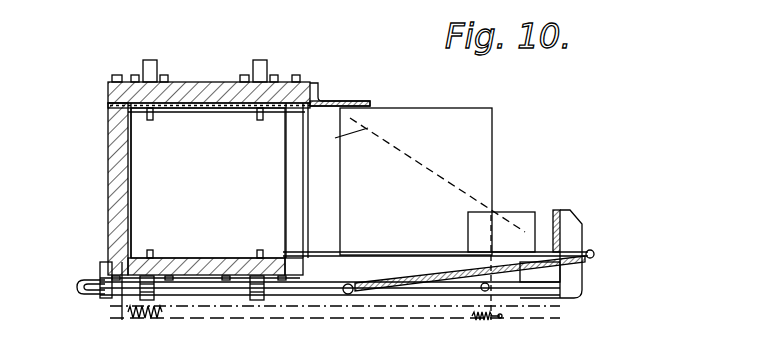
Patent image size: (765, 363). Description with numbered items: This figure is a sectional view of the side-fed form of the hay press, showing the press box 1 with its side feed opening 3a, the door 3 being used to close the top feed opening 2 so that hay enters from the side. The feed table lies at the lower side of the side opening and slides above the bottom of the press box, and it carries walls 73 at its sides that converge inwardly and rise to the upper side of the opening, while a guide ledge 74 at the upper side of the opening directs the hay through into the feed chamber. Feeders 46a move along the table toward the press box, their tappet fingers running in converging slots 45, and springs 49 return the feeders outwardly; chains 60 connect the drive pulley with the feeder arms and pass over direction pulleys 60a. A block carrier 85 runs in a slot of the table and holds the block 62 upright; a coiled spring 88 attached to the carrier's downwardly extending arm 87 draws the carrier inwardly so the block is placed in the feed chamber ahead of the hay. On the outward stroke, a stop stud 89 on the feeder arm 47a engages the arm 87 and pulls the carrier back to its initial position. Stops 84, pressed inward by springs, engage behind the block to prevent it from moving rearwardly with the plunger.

The press box 1 is at (208, 183).
The feed opening 2 is at (108, 95).
The door 3 is at (217, 98).
The feed opening 3a is at (118, 75).
The guide ledge 74 is at (368, 88).
The stops 84 is at (150, 118).
The feeder arm 47a is at (568, 222).
The block 62 is at (496, 162).
The walls 73 is at (366, 129).
The block carrier 85 is at (528, 214).
The slots 45 is at (393, 250).
The feeders 46a is at (452, 300).
The chains 60 is at (200, 293).
The direction pulleys 60a is at (82, 287).
The coiled spring 88 is at (143, 318).
The springs 49 is at (413, 292).
The stop stud 89 is at (489, 290).
The arm 87 is at (528, 270).